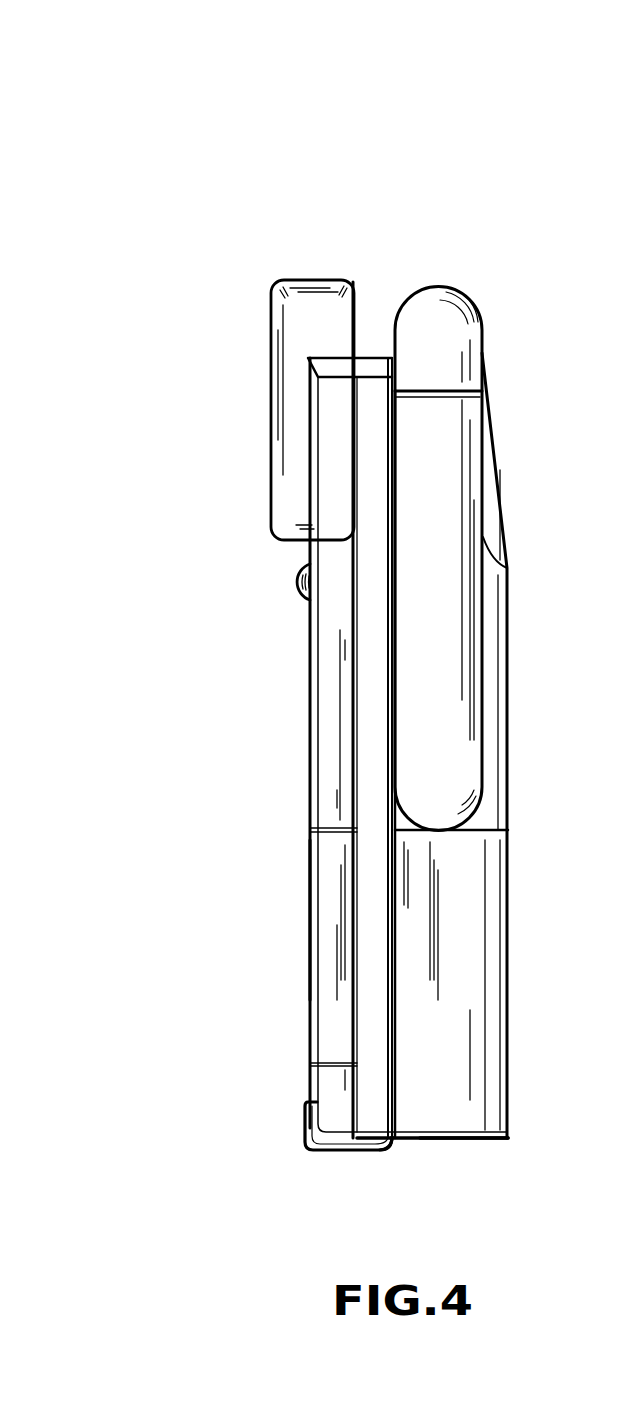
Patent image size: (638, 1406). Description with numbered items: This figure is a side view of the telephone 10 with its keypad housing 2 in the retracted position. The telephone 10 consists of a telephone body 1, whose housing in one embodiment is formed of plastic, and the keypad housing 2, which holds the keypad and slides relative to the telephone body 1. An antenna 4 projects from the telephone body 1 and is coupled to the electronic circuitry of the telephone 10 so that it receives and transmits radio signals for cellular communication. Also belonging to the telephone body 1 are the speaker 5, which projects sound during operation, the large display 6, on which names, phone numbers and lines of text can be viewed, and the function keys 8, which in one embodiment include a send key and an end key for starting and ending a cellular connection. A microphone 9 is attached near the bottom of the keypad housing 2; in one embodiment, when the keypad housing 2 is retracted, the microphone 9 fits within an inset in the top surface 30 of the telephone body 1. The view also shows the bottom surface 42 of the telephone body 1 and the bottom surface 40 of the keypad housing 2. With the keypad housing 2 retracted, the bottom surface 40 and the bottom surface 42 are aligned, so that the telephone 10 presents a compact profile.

The telephone 10 is at (99, 52).
The telephone body 1 is at (509, 672).
The keypad housing 2 is at (377, 1093).
The antenna 4 is at (479, 300).
The speaker 5 is at (273, 284).
The display 6 is at (310, 877).
The function keys 8 is at (297, 578).
The microphone 9 is at (305, 1137).
The top surface 30 is at (266, 981).
The bottom surface of keypad housing 40 is at (392, 1141).
The bottom surface of telephone body 42 is at (463, 1142).